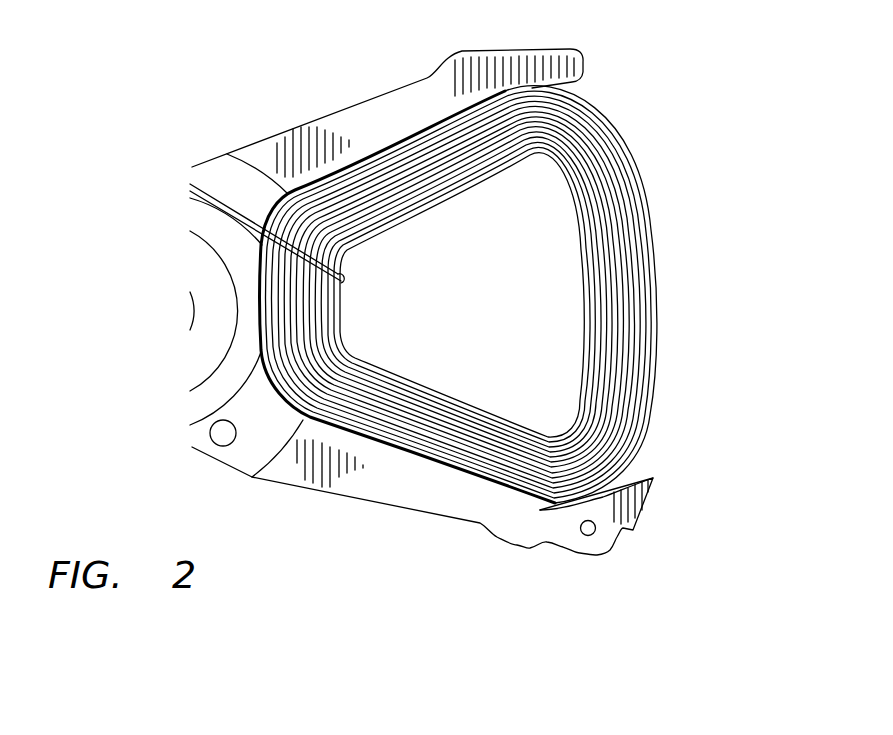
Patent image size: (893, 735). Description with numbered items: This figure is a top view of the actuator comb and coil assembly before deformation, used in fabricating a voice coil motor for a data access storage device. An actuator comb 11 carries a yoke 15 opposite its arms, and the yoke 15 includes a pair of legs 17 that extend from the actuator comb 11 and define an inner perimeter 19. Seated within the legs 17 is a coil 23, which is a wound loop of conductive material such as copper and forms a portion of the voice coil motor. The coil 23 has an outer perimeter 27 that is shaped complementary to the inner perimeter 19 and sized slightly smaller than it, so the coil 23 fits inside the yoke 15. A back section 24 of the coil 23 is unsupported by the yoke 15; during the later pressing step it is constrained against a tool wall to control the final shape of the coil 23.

The actuator comb 11 is at (201, 117).
The yoke 15 is at (429, 577).
The legs 17 is at (424, 88).
The inner perimeter 19 is at (437, 127).
The coil 23 is at (595, 303).
The back section 24 is at (647, 233).
The outer perimeter 27 is at (390, 147).